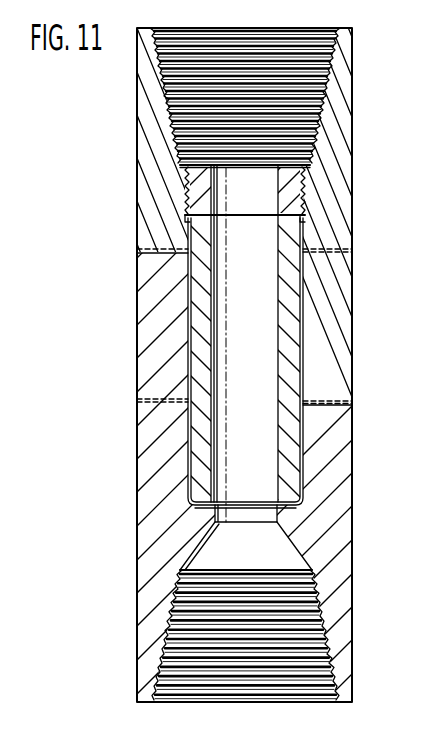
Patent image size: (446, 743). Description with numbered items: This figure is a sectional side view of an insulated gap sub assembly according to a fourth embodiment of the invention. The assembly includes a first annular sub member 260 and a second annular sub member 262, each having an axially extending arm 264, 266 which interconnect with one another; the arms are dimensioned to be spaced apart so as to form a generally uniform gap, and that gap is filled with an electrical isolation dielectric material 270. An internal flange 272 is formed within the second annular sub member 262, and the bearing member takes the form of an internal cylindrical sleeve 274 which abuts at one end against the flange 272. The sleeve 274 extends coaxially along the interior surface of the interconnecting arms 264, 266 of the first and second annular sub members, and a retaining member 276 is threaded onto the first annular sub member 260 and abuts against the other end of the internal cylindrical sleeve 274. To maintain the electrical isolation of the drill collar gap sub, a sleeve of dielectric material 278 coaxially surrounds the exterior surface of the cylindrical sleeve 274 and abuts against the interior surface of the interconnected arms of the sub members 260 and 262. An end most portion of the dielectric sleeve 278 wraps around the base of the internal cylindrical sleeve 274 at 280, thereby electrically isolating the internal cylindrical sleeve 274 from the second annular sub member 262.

The first annular sub member 260 is at (354, 148).
The second annular sub member 262 is at (353, 490).
The axially extending arm 264 is at (353, 303).
The axially extending arm 266 is at (143, 347).
The electrical isolation dielectric material 270 is at (153, 248).
The internal flange 272 is at (277, 510).
The internal cylindrical sleeve 274 is at (240, 233).
The retaining member 276 is at (198, 167).
The sleeve of dielectric material 278 is at (193, 328).
The end most portion of the dielectric sleeve 280 is at (202, 495).